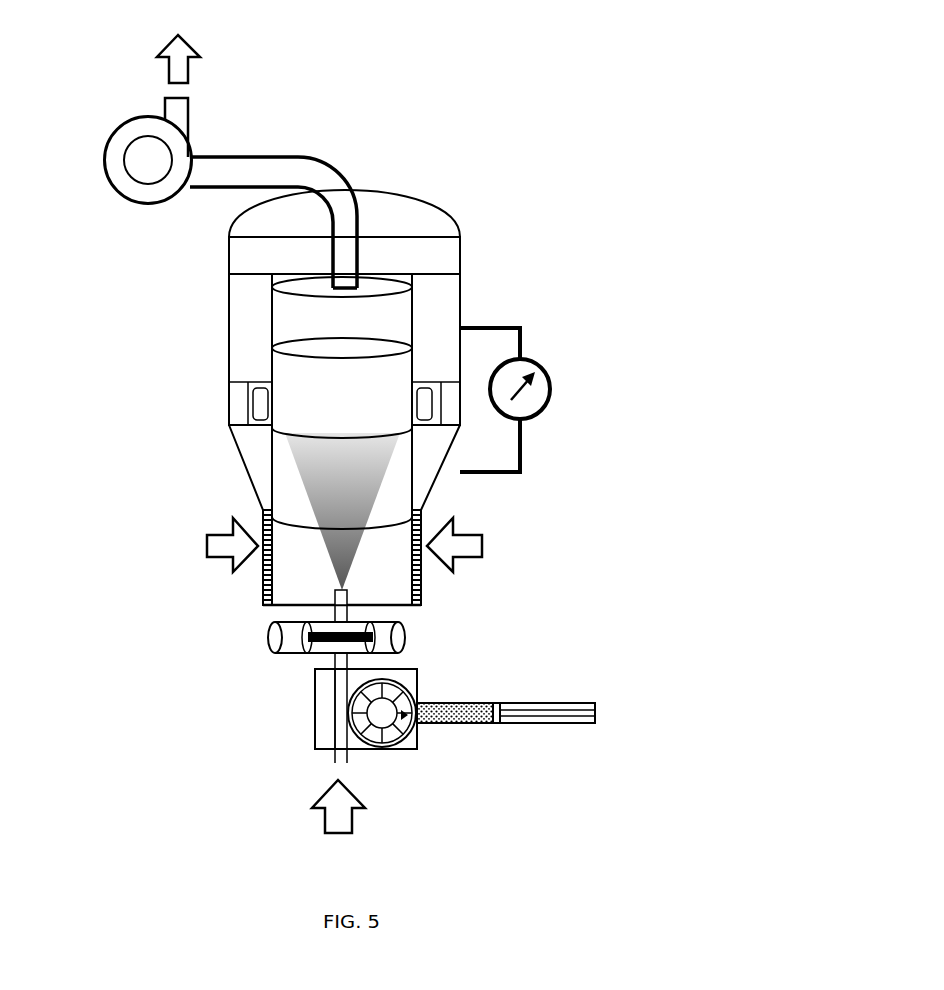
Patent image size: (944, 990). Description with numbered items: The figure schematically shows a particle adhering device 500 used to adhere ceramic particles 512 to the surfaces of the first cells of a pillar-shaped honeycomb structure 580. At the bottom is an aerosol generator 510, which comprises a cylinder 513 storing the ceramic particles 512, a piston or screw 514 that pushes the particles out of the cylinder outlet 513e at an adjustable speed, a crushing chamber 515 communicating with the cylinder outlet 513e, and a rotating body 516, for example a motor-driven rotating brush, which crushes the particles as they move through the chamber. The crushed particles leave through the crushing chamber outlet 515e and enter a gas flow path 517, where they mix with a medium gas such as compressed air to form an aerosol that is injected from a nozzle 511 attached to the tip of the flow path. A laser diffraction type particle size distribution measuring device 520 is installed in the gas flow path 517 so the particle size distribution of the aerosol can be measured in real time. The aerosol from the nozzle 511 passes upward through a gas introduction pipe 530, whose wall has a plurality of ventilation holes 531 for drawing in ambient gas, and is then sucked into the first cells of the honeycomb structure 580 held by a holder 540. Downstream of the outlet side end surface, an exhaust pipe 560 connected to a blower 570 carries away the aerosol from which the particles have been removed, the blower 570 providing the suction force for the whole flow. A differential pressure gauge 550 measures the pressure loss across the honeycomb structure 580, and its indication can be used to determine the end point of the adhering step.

The particle adhering device 500 is at (402, 140).
The aerosol generator 510 is at (228, 597).
The nozzle 511 is at (347, 598).
The ceramic particles 512 is at (468, 725).
The cylinder 513 is at (573, 725).
The cylinder outlet 513e is at (418, 702).
The piston or screw 514 is at (557, 710).
The crushing chamber 515 is at (385, 748).
The crushing chamber outlet 515e is at (345, 707).
The rotating body 516 is at (340, 690).
The gas flow path 517 is at (332, 738).
The laser diffraction type particle size distribution measuring device 520 is at (405, 640).
The gas introduction pipe 530 is at (256, 586).
The ventilation holes 531 is at (263, 513).
The holder 540 is at (229, 292).
The differential pressure gauge 550 is at (553, 392).
The exhaust pipe 560 is at (280, 157).
The blower 570 is at (145, 118).
The pillar-shaped honeycomb structure 580 is at (272, 350).